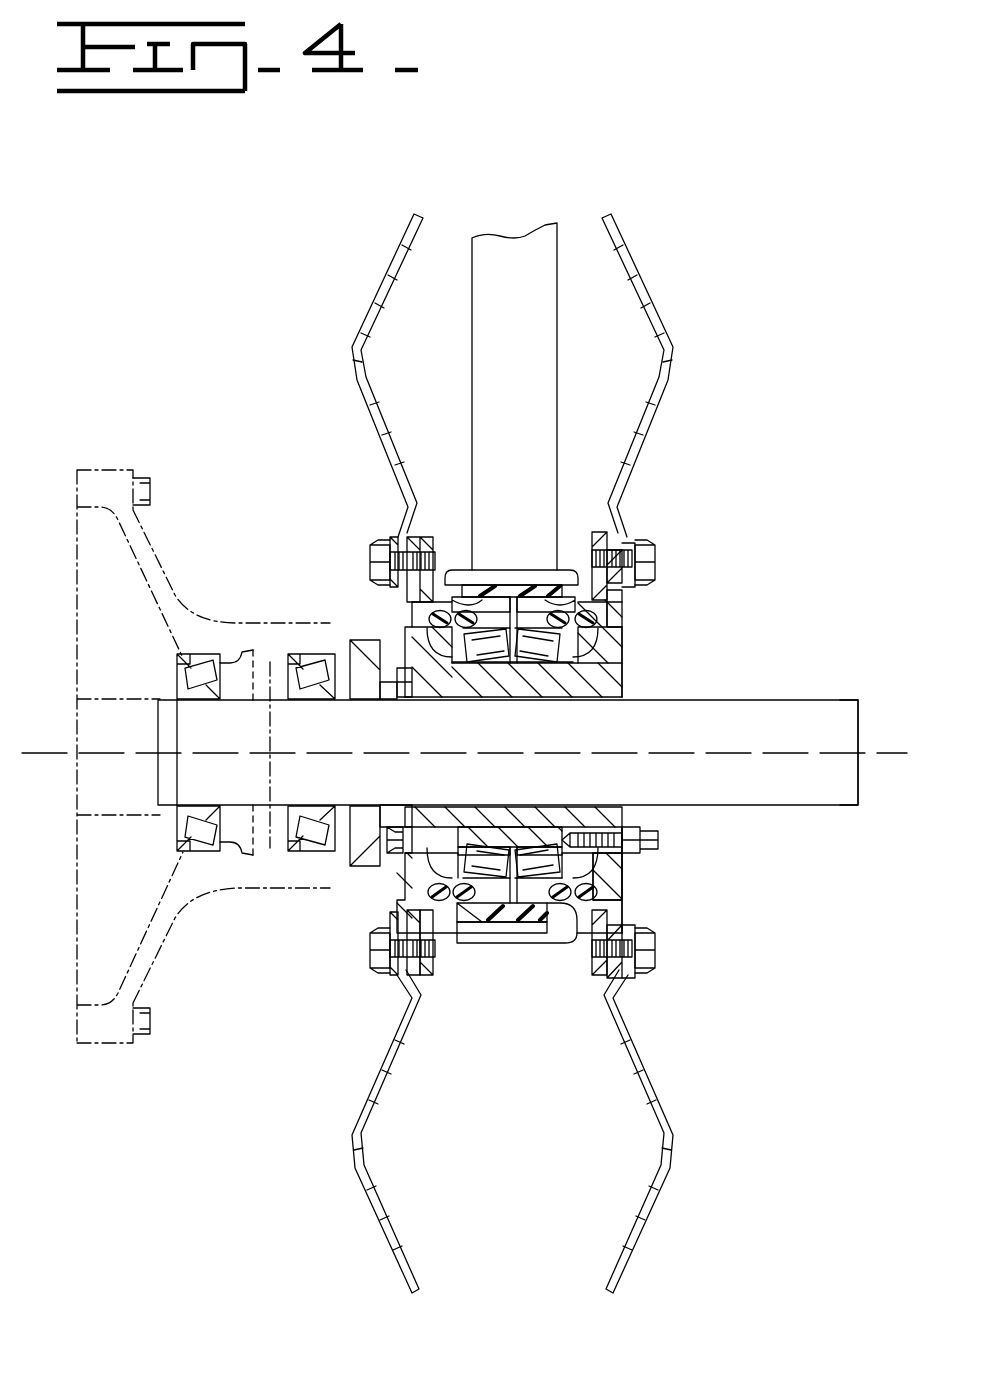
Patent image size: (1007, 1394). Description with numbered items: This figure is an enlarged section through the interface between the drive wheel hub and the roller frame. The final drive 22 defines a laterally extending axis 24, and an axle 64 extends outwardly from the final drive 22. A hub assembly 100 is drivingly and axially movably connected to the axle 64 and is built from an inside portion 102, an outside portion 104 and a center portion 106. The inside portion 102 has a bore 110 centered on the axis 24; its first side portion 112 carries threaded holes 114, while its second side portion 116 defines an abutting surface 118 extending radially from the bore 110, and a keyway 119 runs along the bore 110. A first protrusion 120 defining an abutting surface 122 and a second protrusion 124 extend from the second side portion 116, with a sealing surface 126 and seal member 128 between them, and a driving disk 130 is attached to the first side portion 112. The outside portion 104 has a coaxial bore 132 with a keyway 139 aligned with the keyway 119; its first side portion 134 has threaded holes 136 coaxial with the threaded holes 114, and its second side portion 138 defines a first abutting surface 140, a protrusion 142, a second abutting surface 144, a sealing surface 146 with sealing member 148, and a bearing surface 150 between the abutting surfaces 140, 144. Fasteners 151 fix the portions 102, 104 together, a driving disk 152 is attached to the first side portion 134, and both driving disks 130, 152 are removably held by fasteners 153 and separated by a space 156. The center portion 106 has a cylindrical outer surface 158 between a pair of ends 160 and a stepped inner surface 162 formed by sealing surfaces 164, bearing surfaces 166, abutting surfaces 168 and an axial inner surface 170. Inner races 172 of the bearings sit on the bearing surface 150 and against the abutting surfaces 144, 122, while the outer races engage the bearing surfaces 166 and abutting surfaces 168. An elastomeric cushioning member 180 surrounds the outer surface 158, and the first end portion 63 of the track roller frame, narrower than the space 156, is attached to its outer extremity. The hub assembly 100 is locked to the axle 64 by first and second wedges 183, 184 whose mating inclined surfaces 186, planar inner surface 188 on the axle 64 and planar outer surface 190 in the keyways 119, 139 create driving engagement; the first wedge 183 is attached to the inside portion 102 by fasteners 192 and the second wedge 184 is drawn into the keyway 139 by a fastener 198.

The final drive 22 is at (168, 557).
The axis 24 is at (872, 760).
The first end portion 63 is at (560, 350).
The axle 64 is at (858, 700).
The hub assembly 100 is at (460, 1065).
The inside portion 102 is at (398, 600).
The outside portion 104 is at (640, 602).
The center portion 106 is at (570, 965).
The bore 110 is at (392, 700).
The first side portion 112 is at (397, 545).
The threaded holes 114 is at (425, 535).
The second side portion 116 is at (512, 665).
The abutting surface 118 is at (525, 685).
The keyway 119 is at (405, 790).
The first protrusion 120 is at (440, 955).
The abutting surface 122 is at (445, 962).
The second protrusion 124 is at (440, 532).
The sealing surface 126 is at (400, 615).
The seal member 128 is at (405, 897).
The driving disk 130 is at (395, 275).
The bore 132 is at (628, 695).
The first side portion 134 is at (635, 535).
The threaded holes 136 is at (655, 545).
The second side portion 138 is at (463, 812).
The keyway 139 is at (635, 807).
The first abutting surface 140 is at (465, 662).
The protrusion 142 is at (600, 530).
The second abutting surface 144 is at (625, 860).
The sealing surface 146 is at (625, 625).
The sealing member 148 is at (625, 900).
The bearing surface 150 is at (525, 930).
The fasteners 151 is at (362, 655).
The driving disk 152 is at (645, 285).
The fasteners 153 is at (365, 555).
The space 156 is at (513, 1301).
The cylindrical outer surface 158 is at (545, 575).
The ends 160 is at (395, 915).
The inner surface 162 is at (515, 585).
The sealing surface 164 is at (490, 560).
The bearing surface 166 is at (562, 560).
The abutting surface 168 is at (600, 885).
The axial inner surface 170 is at (595, 697).
The inner race 172 is at (422, 650).
The cushioning member 180 is at (560, 975).
The first wedge 183 is at (392, 820).
The second wedge 184 is at (655, 838).
The mating inclined surfaces 186 is at (527, 840).
The planar inner surface 188 is at (490, 812).
The planar outer surface 190 is at (565, 812).
The fasteners 192 is at (400, 870).
The fastener 198 is at (660, 845).